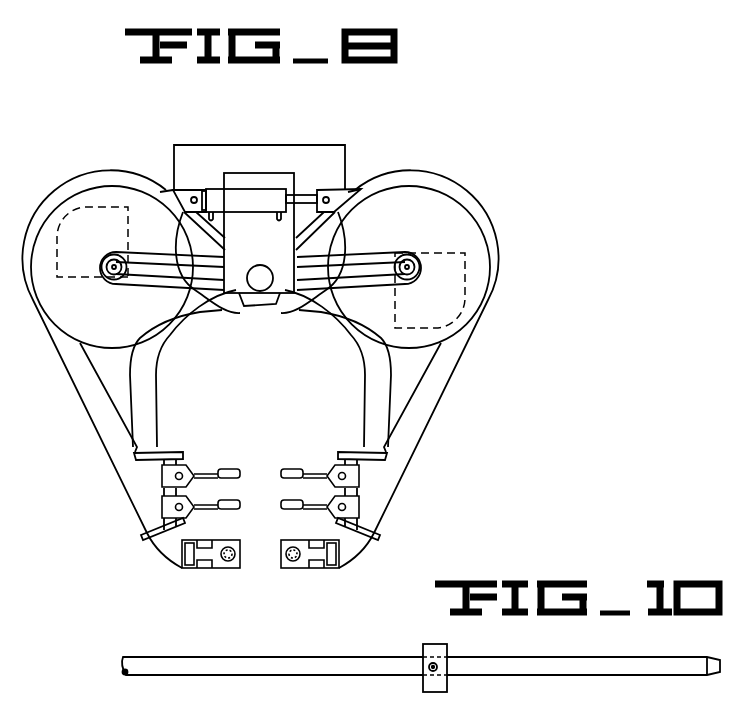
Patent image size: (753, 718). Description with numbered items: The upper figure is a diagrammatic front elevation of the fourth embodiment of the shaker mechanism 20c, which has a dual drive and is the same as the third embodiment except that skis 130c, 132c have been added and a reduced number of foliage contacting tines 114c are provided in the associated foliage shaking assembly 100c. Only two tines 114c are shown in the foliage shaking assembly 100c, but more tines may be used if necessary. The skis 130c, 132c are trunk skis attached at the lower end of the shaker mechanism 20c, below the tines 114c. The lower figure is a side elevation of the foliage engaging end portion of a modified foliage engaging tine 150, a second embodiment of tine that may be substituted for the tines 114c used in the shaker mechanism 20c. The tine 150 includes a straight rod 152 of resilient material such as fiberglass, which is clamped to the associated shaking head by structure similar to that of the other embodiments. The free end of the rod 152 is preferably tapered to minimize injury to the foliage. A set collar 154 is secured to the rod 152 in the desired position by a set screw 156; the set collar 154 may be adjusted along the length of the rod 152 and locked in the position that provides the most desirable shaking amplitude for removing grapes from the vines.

In FIG. 8, the shaker mechanism 20c is at (462, 147).
In FIG. 8, the foliage shaking assembly 100c is at (327, 450).
In FIG. 8, the foliage contacting tines 114c is at (310, 497).
In FIG. 8, the ski 130c is at (238, 561).
In FIG. 8, the ski 132c is at (284, 561).
In FIG. 10, the foliage engaging tine 150 is at (116, 657).
In FIG. 10, the straight rod 152 is at (300, 677).
In FIG. 10, the set collar 154 is at (438, 692).
In FIG. 10, the set screw 156 is at (438, 664).